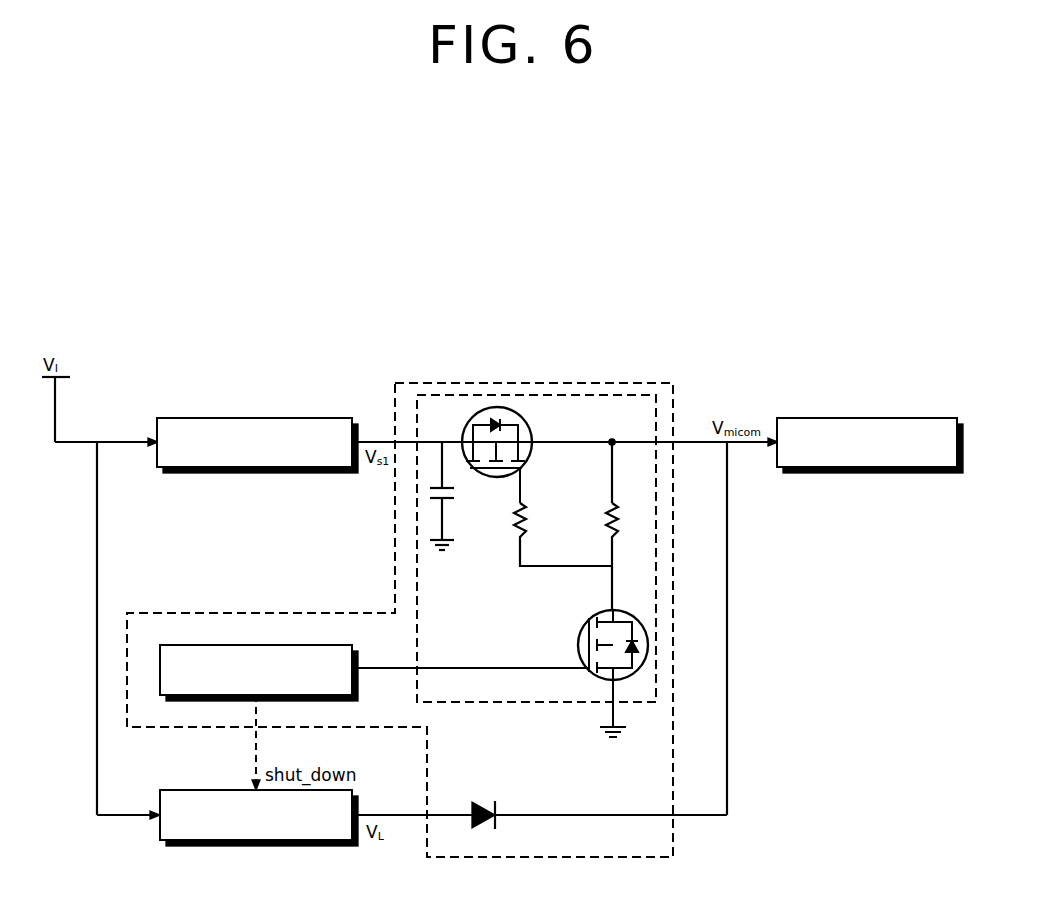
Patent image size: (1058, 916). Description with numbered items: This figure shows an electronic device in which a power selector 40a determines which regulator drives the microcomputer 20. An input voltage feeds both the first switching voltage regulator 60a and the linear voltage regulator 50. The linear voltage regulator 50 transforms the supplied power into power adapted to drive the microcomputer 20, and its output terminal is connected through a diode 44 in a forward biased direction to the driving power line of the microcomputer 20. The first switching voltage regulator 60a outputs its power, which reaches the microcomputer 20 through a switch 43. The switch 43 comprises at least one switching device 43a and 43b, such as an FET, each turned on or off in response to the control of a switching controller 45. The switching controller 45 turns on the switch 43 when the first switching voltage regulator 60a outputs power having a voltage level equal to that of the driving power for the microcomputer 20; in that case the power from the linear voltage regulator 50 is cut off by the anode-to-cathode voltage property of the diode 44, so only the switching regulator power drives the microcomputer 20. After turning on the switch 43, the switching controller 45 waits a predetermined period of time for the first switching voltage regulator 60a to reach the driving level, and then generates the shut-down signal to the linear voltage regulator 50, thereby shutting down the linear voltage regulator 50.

The microcomputer 20 is at (830, 418).
The power selector 40a is at (673, 553).
The switch 43 is at (657, 617).
The switching device 43a is at (494, 408).
The switching device 43b is at (580, 638).
The diode 44 is at (485, 826).
The switching controller 45 is at (253, 645).
The linear voltage regulator 50 is at (258, 848).
The first switching voltage regulator 60a is at (252, 418).